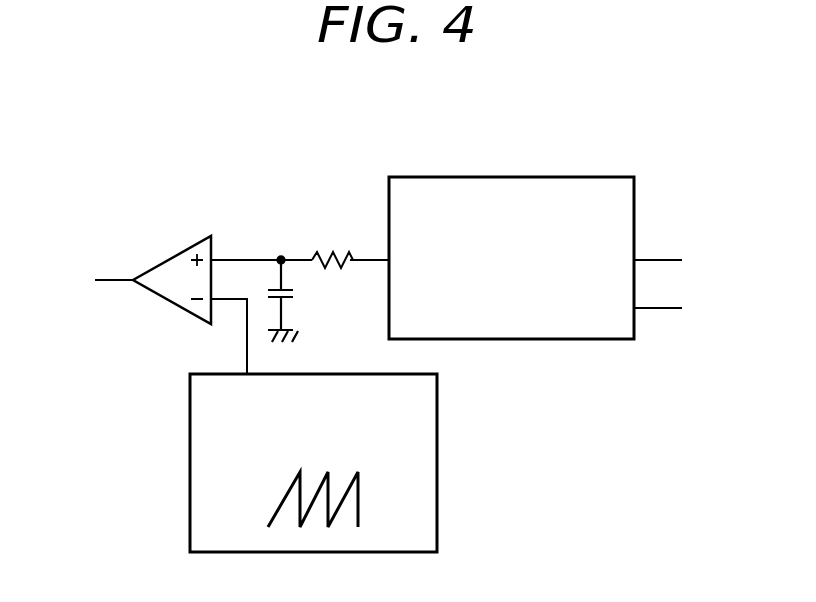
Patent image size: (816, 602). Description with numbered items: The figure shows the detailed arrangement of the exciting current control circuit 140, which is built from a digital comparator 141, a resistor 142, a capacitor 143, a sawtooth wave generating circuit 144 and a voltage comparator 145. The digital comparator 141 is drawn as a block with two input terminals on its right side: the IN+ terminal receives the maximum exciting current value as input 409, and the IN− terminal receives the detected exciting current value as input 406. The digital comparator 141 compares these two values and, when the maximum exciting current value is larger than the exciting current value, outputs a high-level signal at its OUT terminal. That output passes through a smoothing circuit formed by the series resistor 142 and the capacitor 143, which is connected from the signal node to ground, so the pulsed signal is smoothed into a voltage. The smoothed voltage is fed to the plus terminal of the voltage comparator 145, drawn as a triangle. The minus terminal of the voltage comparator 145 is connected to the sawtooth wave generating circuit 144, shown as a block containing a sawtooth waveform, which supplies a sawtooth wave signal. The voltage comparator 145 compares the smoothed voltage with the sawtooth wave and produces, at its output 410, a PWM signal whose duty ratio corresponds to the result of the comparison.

The exciting current control circuit 140 is at (448, 128).
The digital comparator 141 is at (561, 176).
The resistor 142 is at (333, 251).
The capacitor 143 is at (297, 291).
The sawtooth wave generating circuit 144 is at (440, 411).
The voltage comparator 145 is at (172, 250).
The positive input signal 409 is at (682, 260).
The negative input signal 406 is at (682, 309).
The output signal 410 is at (92, 279).